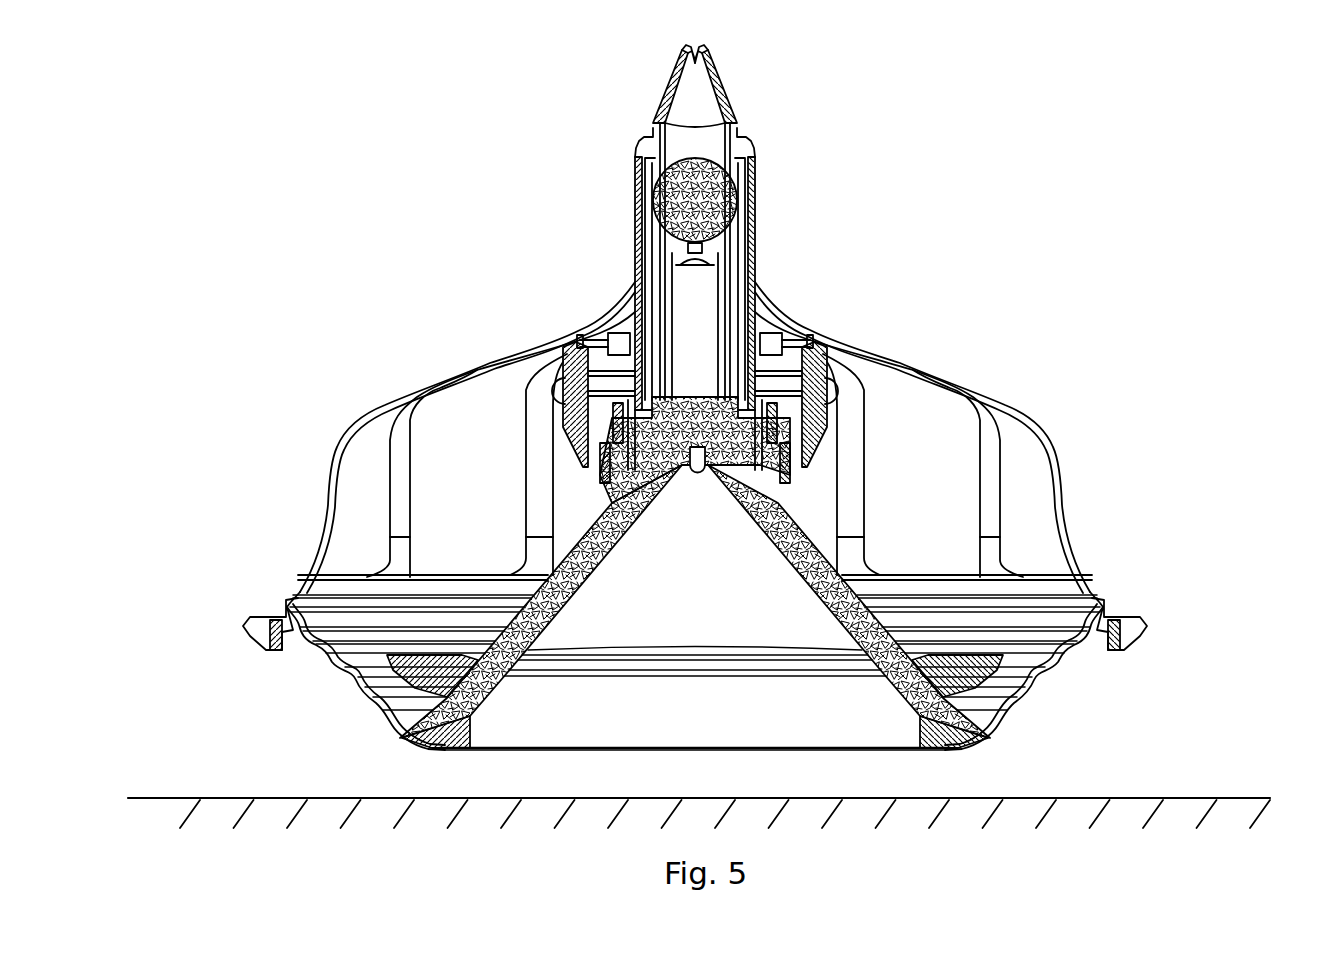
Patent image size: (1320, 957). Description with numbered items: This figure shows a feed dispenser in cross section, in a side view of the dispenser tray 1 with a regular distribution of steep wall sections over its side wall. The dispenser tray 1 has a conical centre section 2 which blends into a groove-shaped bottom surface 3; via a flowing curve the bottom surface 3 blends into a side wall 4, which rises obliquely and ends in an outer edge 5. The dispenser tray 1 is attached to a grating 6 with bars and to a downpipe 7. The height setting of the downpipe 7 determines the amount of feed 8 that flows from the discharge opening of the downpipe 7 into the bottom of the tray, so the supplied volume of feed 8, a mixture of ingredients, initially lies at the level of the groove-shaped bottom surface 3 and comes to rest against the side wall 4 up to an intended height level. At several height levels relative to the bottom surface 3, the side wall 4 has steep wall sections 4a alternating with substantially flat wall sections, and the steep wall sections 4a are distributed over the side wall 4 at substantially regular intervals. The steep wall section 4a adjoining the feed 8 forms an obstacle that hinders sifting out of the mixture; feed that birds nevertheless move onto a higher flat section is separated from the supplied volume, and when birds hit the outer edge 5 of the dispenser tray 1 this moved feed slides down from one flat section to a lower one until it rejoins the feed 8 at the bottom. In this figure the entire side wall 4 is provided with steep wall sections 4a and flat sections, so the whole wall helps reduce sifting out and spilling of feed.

The dispenser tray 1 is at (342, 707).
The centre section 2 is at (567, 723).
The bottom surface 3 is at (983, 743).
The side wall 4 is at (1047, 697).
The steep wall sections 4a is at (1043, 686).
The outer edge 5 is at (1113, 607).
The grating 6 is at (1043, 427).
The downpipe 7 is at (727, 293).
The feed 8 is at (775, 425).